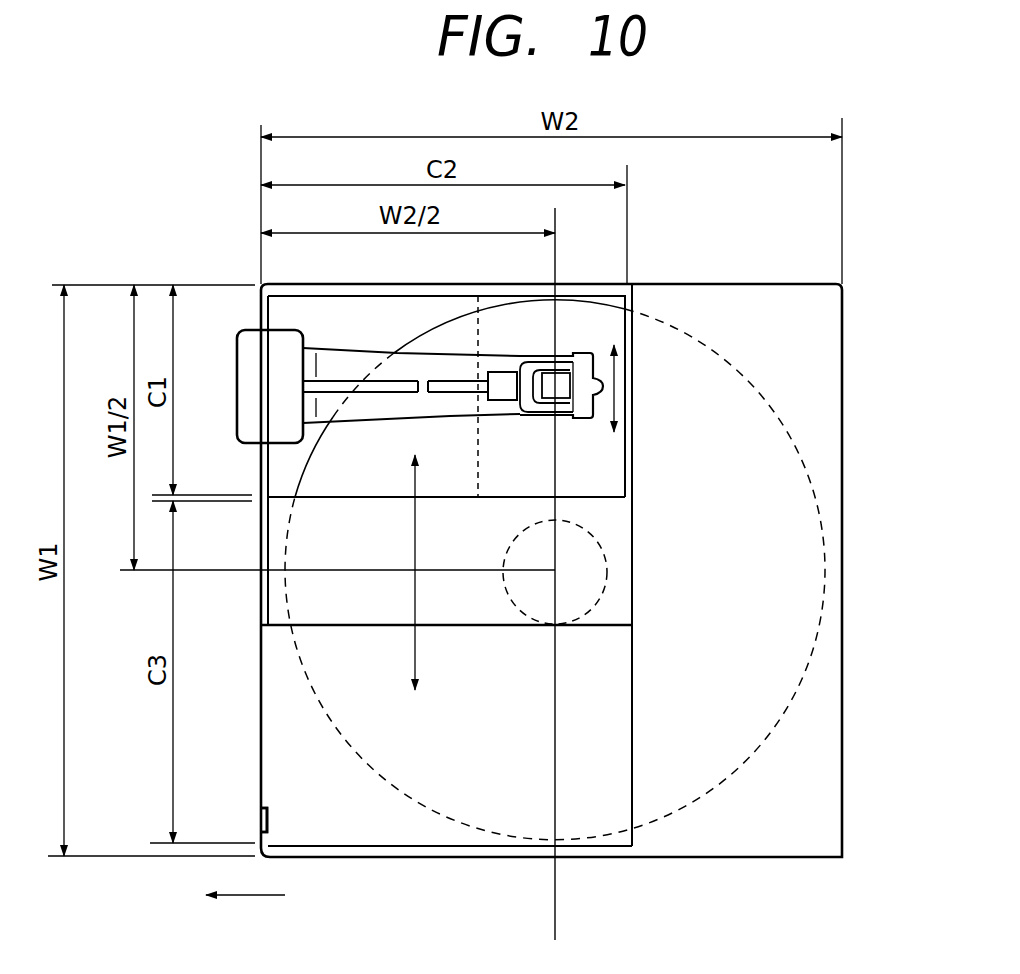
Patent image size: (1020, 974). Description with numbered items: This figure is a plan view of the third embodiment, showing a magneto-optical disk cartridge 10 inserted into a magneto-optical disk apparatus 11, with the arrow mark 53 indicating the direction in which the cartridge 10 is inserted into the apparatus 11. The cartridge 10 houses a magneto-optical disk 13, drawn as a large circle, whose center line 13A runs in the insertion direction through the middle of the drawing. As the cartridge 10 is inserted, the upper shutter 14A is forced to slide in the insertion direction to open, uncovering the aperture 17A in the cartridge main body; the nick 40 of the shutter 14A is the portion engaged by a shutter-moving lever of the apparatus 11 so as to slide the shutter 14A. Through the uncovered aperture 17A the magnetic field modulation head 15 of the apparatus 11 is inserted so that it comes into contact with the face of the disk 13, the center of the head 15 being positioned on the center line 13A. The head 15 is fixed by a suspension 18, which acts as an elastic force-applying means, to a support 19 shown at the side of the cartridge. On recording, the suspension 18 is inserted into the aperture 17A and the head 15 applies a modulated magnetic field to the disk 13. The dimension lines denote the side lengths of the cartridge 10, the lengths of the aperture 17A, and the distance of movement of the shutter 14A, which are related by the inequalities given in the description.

The magneto-optical disk cartridge 10 is at (847, 808).
The magneto-optical disk apparatus 11 is at (768, 262).
The magneto-optical disk 13 is at (420, 350).
The center line of magneto-optical disk 13A is at (551, 904).
The upper shutter 14A is at (633, 764).
The magnetic field modulation head 15 is at (567, 385).
The aperture 17A is at (310, 503).
The suspension 18 is at (341, 347).
The support 19 is at (240, 318).
The nick 40 is at (260, 812).
The arrow mark 53 is at (262, 897).